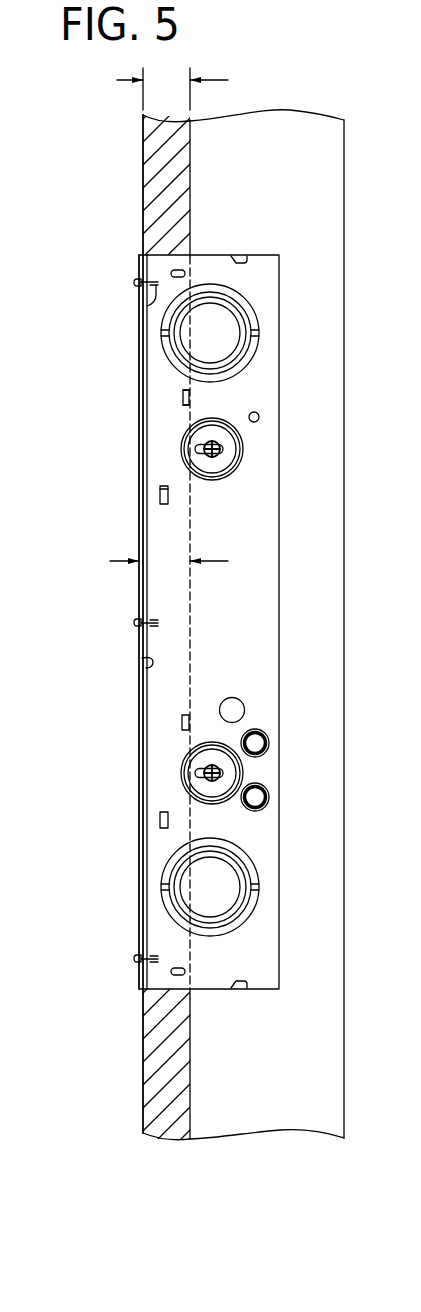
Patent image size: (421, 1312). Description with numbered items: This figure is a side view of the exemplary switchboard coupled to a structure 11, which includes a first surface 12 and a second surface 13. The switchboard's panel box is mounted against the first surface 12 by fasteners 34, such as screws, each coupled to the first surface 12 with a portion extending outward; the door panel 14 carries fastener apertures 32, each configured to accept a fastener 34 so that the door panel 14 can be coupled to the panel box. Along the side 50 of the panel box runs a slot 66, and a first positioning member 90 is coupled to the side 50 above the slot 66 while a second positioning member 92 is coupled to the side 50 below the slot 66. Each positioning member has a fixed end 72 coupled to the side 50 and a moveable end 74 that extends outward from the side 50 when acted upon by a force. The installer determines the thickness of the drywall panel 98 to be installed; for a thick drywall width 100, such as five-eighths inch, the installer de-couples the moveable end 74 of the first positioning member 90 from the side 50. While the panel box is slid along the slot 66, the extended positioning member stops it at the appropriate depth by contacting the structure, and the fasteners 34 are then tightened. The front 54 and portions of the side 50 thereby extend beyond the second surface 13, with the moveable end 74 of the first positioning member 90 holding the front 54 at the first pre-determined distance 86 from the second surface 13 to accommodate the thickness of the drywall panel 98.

The structure 11 is at (229, 1142).
The first surface 12 is at (250, 132).
The second surface 13 is at (187, 178).
The door panel 14 is at (143, 599).
The fastener aperture 32 is at (143, 283).
The fastener 34 is at (147, 307).
The side 50 is at (211, 682).
The front 54 is at (148, 661).
The slot 66 is at (200, 445).
The fixed end 72 is at (184, 388).
The moveable end 74 is at (183, 407).
The first pre-determined distance 86 is at (110, 561).
The first positioning member 90 is at (182, 393).
The second positioning member 92 is at (160, 492).
The drywall panel 98 is at (152, 142).
The thick drywall width 100 is at (117, 80).